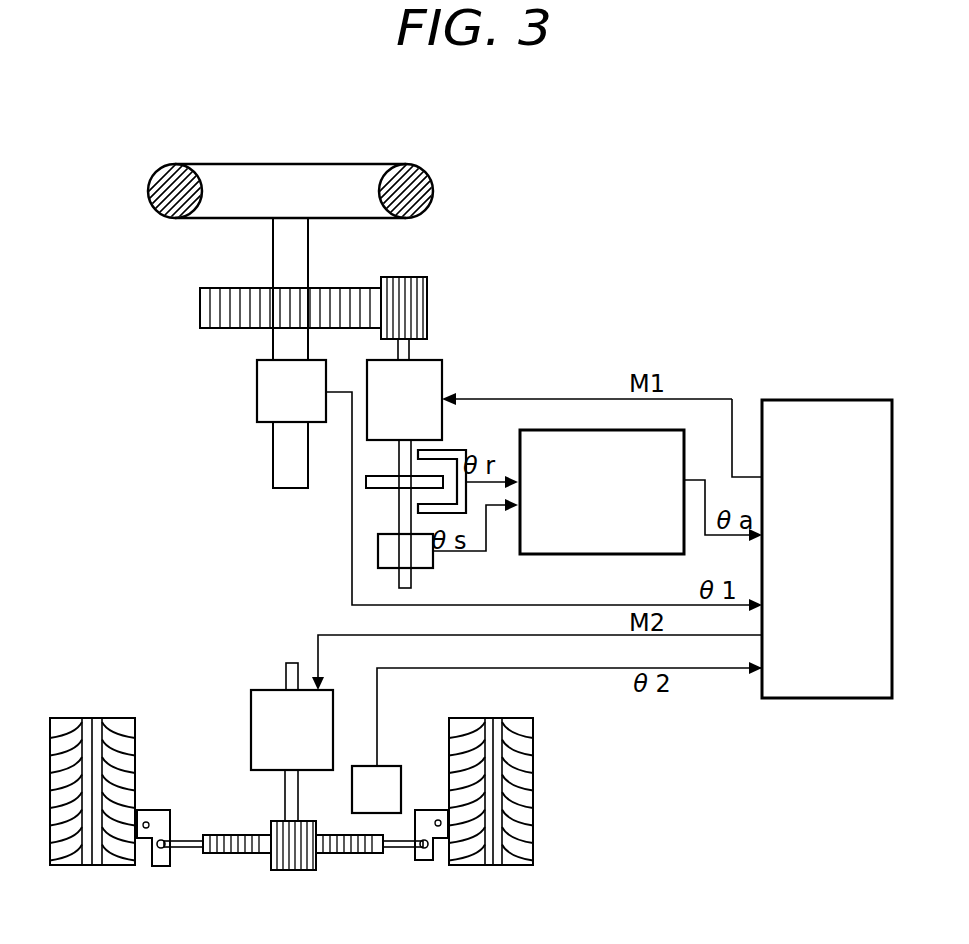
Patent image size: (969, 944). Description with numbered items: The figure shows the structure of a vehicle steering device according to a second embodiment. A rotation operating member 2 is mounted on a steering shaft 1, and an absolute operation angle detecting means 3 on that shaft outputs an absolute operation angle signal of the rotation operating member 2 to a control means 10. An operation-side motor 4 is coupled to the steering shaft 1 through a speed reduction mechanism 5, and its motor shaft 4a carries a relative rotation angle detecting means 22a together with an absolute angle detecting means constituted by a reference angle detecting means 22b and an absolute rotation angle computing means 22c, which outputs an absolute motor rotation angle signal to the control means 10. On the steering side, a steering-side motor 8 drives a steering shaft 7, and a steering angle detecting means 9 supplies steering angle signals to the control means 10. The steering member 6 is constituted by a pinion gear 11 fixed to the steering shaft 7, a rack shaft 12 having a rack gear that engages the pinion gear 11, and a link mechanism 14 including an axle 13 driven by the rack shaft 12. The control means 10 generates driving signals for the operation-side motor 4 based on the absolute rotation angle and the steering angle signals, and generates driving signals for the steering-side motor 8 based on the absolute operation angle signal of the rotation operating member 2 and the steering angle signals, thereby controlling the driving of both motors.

The steering shaft 1 is at (273, 250).
The rotation operating member 2 is at (347, 164).
The absolute operation angle detecting means 3 is at (257, 375).
The operation-side motor 4 is at (442, 377).
The motor shaft 4a is at (409, 347).
The speed reduction mechanism 5 is at (343, 288).
The steering member 6 is at (208, 757).
The steering shaft 7 is at (285, 796).
The steering-side motor 8 is at (268, 690).
The steering angle detecting means 9 is at (386, 766).
The control means 10 is at (840, 400).
The pinion gear 11 is at (290, 870).
The rack shaft 12 is at (232, 853).
The axle 13 is at (150, 810).
The link mechanism 14 is at (160, 866).
The relative rotation angle detecting means 22a is at (418, 508).
The reference angle detecting means 22b is at (378, 551).
The absolute rotation angle computing means 22c is at (641, 430).